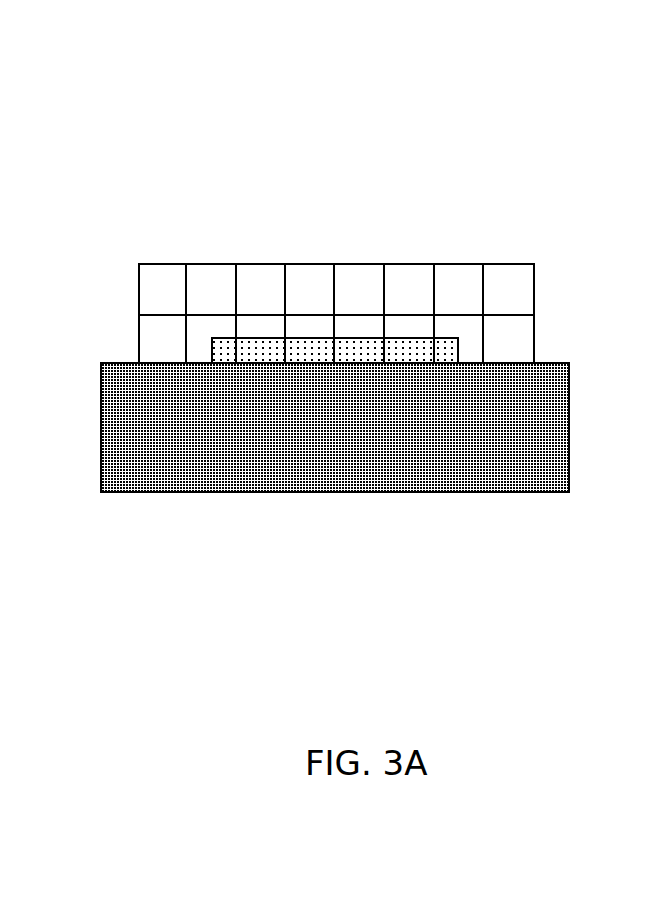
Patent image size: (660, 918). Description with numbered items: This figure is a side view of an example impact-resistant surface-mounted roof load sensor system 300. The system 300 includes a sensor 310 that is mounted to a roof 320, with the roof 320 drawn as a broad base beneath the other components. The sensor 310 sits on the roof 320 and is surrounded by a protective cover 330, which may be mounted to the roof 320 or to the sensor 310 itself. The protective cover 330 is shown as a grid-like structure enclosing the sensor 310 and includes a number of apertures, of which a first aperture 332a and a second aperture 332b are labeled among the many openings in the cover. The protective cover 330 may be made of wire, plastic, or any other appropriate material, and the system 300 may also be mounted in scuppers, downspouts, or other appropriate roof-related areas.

The impact-resistant roof sensor system 300 is at (180, 132).
The sensor 310 is at (344, 335).
The roof 320 is at (335, 492).
The protective cover 330 is at (455, 265).
The aperture 332a is at (150, 288).
The aperture 332b is at (213, 288).